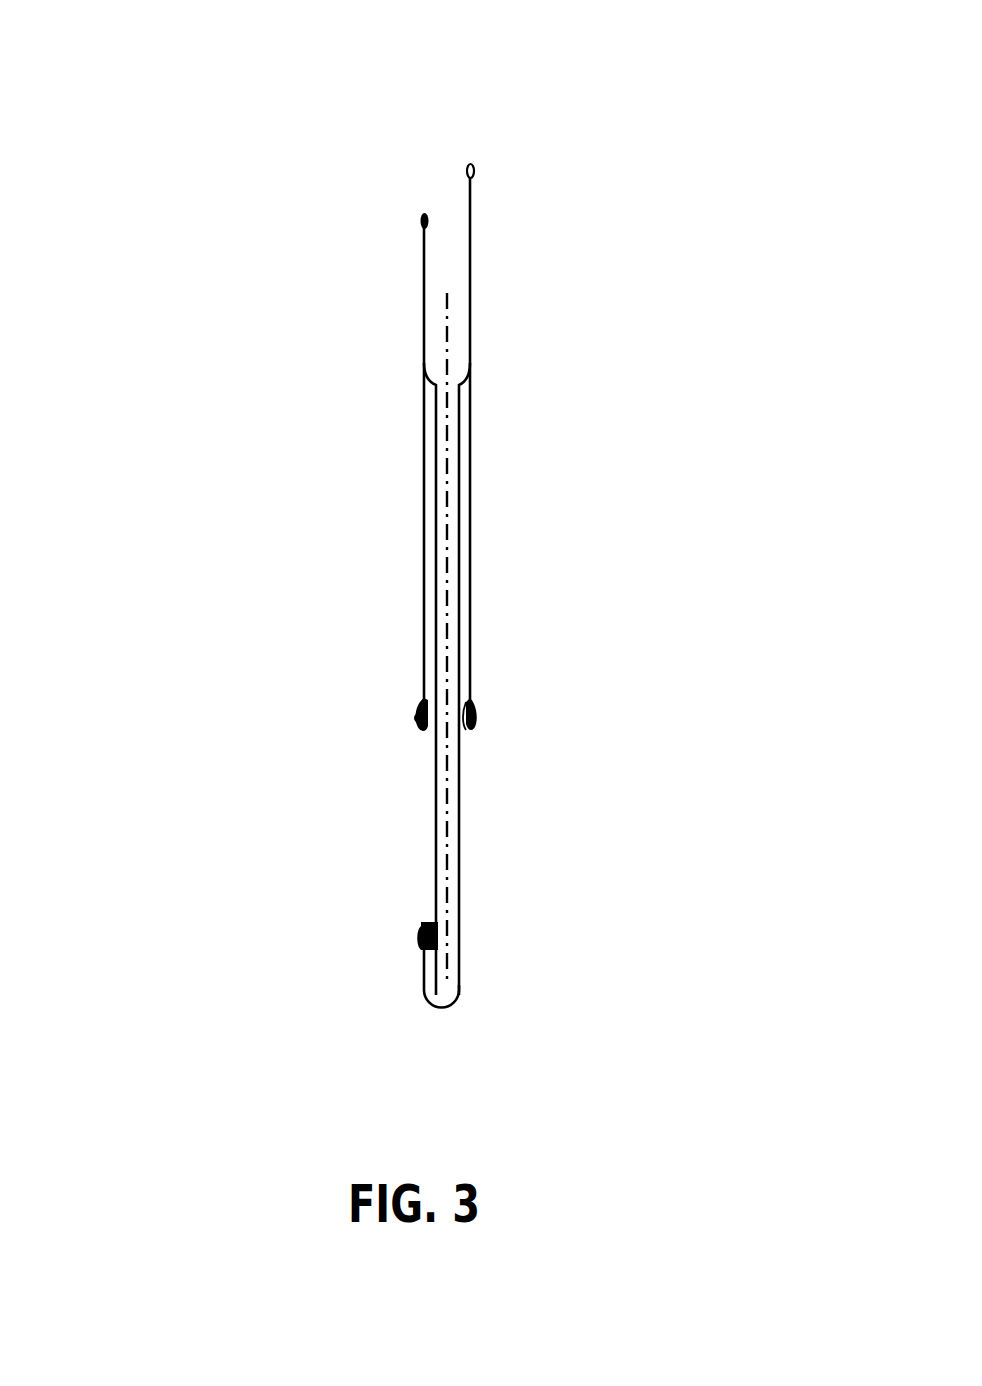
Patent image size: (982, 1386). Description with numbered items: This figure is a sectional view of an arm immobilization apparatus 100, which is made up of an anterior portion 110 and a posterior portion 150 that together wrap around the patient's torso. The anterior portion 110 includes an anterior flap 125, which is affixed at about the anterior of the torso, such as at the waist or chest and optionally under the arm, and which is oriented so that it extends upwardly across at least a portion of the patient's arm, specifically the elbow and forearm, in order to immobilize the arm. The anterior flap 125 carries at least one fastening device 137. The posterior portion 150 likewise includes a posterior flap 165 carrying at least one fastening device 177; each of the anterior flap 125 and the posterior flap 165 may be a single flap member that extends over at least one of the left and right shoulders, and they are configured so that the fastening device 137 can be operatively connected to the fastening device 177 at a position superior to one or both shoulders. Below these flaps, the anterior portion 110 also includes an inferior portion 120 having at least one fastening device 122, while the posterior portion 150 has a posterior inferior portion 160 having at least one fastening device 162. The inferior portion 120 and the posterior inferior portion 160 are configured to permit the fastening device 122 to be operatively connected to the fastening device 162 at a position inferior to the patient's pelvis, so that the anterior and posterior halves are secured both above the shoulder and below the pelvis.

The arm immobilization apparatus 100 is at (340, 262).
The anterior portion 110 is at (318, 452).
The inferior portion 120 is at (435, 840).
The fastening device 122 is at (420, 942).
The anterior flap 125 is at (423, 527).
The fastening device 137 is at (420, 700).
The posterior portion 150 is at (585, 442).
The posterior inferior portion 160 is at (455, 895).
The fastening device 162 is at (429, 936).
The posterior flap 165 is at (470, 453).
The fastening device 177 is at (472, 727).